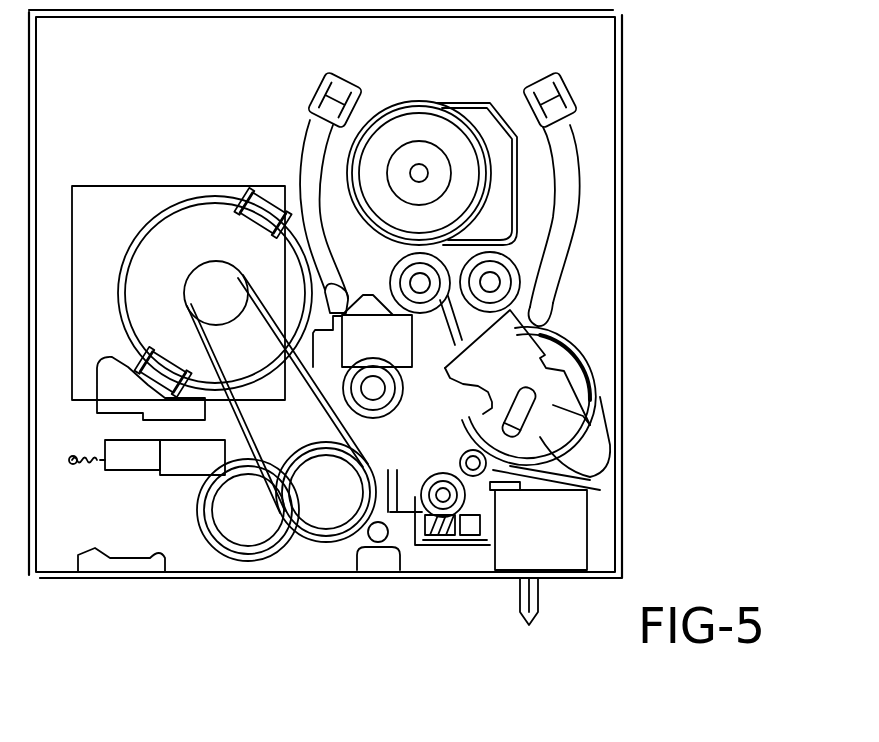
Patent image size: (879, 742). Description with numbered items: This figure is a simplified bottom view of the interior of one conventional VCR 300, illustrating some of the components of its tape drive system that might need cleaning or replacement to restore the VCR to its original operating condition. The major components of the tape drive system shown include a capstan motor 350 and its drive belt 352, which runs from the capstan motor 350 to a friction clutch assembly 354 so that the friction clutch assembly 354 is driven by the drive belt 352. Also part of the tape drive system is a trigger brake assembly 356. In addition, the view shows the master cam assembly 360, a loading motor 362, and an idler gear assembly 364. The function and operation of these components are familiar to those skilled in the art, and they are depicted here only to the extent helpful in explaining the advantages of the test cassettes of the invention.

The tape transport housing 300 is at (686, 133).
The capstan motor 350 is at (217, 251).
The drive belt 352 is at (258, 360).
The friction clutch assembly 354 is at (258, 533).
The trigger brake assembly 356 is at (400, 555).
The master cam assembly 360 is at (585, 349).
The loading motor 362 is at (572, 552).
The idler gear assembly 364 is at (587, 489).